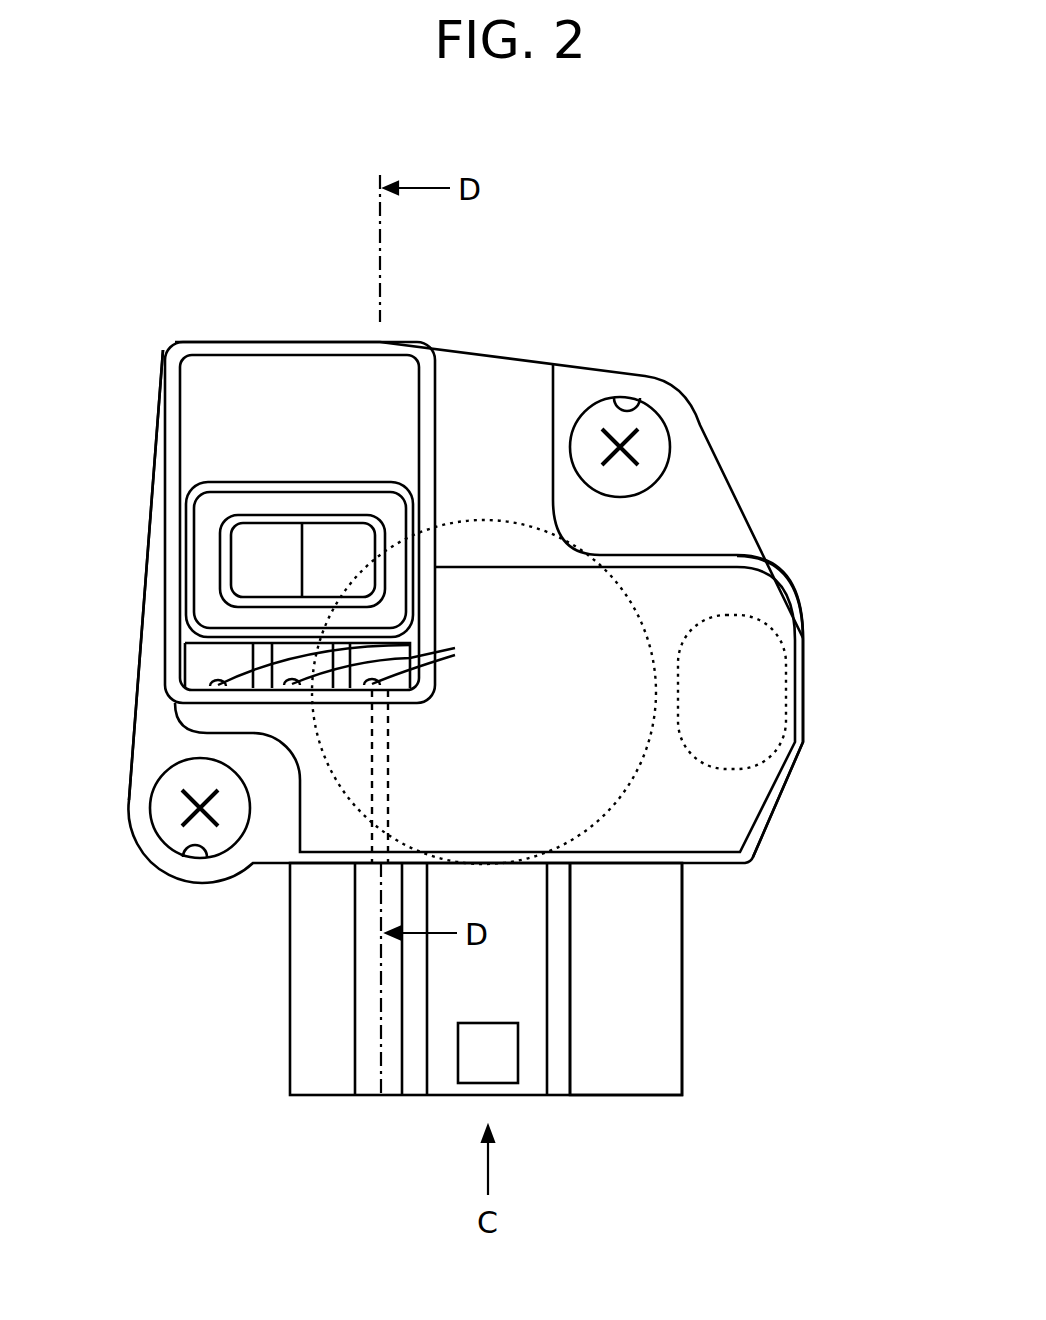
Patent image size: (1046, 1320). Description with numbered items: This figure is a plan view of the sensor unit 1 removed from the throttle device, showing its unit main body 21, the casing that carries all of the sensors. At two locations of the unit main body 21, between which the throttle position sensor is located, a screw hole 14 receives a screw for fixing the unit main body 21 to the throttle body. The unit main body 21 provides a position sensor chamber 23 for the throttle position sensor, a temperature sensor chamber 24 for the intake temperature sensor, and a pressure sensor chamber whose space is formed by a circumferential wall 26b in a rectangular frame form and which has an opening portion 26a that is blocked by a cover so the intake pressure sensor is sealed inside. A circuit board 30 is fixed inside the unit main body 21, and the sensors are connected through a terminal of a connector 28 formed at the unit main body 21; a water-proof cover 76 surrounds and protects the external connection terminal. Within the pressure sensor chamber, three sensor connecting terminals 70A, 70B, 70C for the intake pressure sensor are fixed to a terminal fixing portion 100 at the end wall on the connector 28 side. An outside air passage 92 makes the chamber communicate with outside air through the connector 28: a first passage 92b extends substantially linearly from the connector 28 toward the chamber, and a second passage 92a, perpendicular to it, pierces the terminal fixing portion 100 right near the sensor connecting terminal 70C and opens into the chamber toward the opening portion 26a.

The sensor unit 1 is at (627, 276).
The screw hole 14 is at (640, 407).
The unit main body 21 is at (715, 517).
The position sensor chamber 23 is at (633, 780).
The temperature sensor chamber 24 is at (786, 762).
The opening portion 26a is at (238, 367).
The circumferential wall 26b is at (173, 403).
The connector 28 is at (288, 1033).
The circuit board 30 is at (747, 597).
The sensor connecting terminal 70A is at (212, 662).
The sensor connecting terminal 70B is at (292, 635).
The sensor connecting terminal 70C is at (390, 615).
The water-proof cover 76 is at (662, 1005).
The outside air passage 92 is at (480, 772).
The second passage 92a is at (410, 683).
The first passage 92b is at (392, 781).
The terminal fixing portion 100 is at (413, 658).